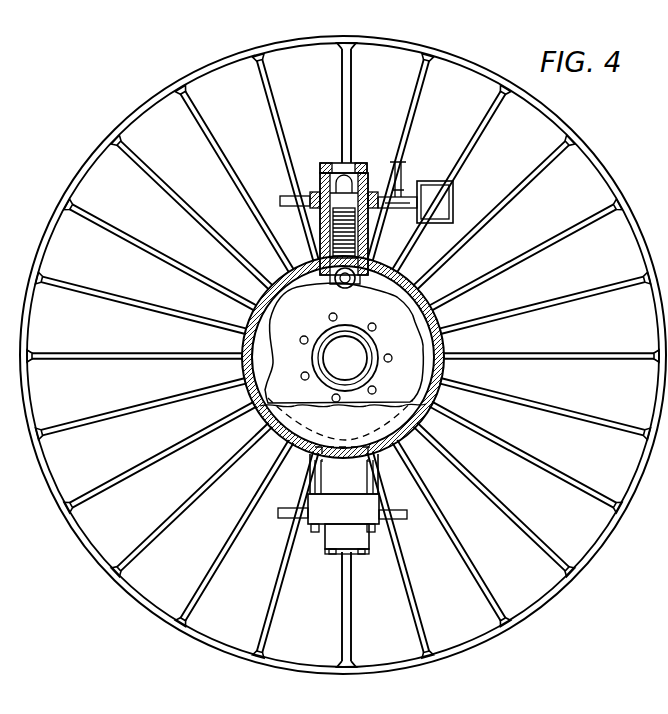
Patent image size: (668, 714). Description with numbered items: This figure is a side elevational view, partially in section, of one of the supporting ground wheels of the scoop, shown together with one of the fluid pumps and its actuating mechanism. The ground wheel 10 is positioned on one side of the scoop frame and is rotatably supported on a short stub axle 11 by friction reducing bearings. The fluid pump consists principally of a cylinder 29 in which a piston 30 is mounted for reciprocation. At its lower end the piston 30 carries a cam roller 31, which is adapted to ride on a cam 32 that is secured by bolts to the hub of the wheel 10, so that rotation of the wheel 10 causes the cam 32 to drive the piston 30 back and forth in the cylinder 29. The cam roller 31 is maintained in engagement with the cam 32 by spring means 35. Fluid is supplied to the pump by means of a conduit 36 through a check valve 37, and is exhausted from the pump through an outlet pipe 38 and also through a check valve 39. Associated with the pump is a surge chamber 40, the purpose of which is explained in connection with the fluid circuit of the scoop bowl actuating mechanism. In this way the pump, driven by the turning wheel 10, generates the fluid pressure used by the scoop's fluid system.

The ground wheel 10 is at (609, 536).
The stub axle 11 is at (346, 357).
The cylinder 29 is at (360, 236).
The piston 30 is at (320, 257).
The cam roller 31 is at (354, 287).
The cam 32 is at (289, 328).
The spring means 35 is at (333, 236).
The conduit 36 is at (288, 196).
The check valve 37 is at (321, 182).
The outlet pipe 38 is at (392, 212).
The check valve 39 is at (392, 190).
The surge chamber 40 is at (433, 195).